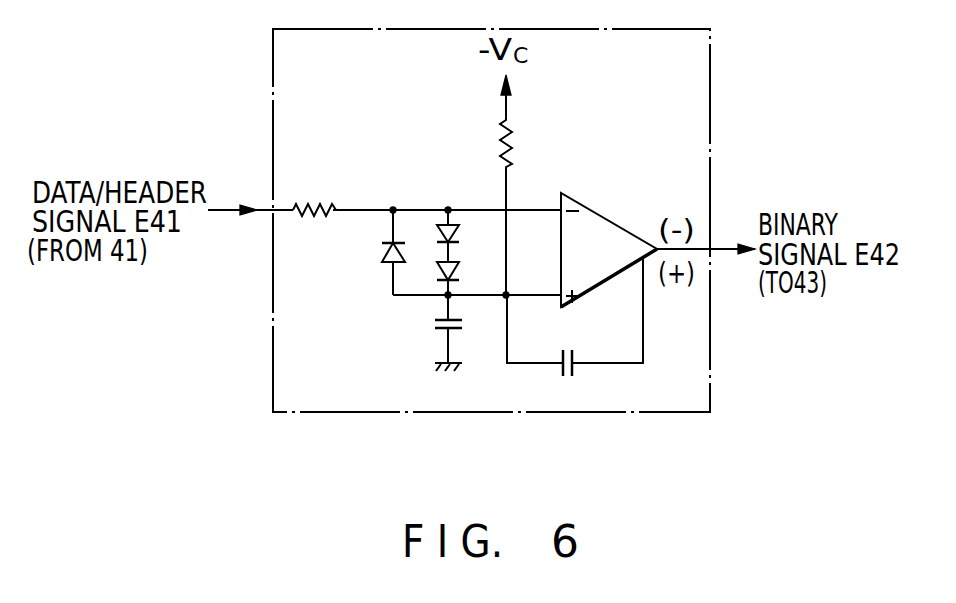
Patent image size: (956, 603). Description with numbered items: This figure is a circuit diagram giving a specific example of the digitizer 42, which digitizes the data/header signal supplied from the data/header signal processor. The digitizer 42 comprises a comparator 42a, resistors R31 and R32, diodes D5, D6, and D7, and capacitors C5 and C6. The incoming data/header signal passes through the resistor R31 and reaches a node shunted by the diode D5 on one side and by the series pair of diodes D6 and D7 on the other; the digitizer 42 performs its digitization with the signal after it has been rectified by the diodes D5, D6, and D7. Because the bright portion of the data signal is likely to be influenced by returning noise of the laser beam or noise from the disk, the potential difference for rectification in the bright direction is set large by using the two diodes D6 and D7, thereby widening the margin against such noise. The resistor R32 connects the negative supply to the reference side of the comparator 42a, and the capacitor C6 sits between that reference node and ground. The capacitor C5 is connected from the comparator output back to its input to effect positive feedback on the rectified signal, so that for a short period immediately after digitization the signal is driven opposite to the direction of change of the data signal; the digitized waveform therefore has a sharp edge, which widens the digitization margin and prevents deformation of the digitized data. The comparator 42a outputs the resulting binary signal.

The digitizer 42 is at (528, 413).
The comparator 42a is at (622, 232).
The resistor R31 is at (322, 206).
The resistor R32 is at (513, 146).
The diode D5 is at (385, 263).
The diode D6 is at (457, 233).
The diode D7 is at (457, 271).
The capacitor C5 is at (578, 367).
The capacitor C6 is at (426, 325).